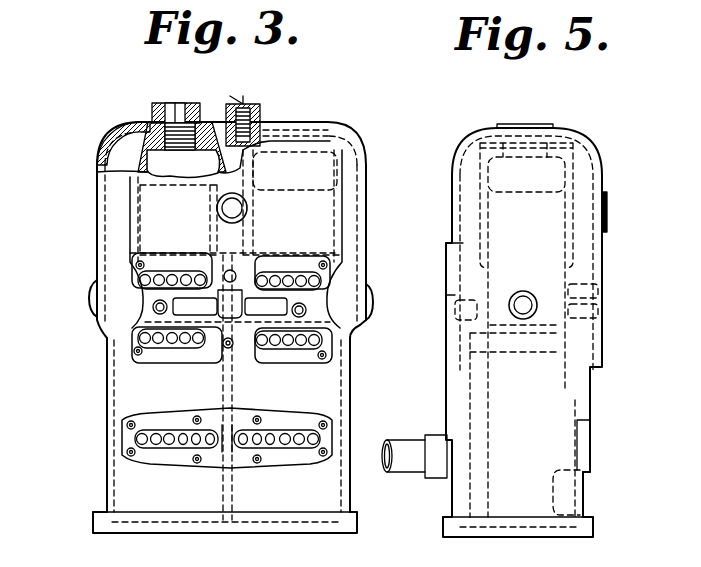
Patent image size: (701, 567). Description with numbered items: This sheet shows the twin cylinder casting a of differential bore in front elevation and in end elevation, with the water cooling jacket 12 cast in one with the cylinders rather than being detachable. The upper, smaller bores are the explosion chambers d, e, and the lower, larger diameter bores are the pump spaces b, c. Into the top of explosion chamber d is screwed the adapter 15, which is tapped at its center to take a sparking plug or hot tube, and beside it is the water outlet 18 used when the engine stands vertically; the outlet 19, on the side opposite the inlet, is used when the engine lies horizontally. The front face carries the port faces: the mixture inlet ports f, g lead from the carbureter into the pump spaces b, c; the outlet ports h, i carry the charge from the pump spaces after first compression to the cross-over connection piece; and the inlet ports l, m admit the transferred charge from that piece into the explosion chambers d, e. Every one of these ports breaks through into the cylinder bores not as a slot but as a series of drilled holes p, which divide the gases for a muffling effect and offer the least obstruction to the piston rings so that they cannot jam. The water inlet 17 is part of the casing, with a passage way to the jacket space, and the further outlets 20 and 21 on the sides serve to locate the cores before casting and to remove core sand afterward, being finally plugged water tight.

In FIG. 3, the water cooling jacket 12 is at (97, 210).
In FIG. 5, the water cooling jacket 12 is at (590, 172).
In FIG. 3, the adapter 15 is at (185, 108).
In FIG. 5, the water inlet 17 is at (430, 470).
In FIG. 3, the water outlet 18 is at (246, 106).
In FIG. 3, the water outlet 19 is at (242, 208).
In FIG. 3, the outlet 20 is at (89, 298).
In FIG. 5, the outlet 20 is at (524, 297).
In FIG. 3, the outlet 21 is at (373, 302).
In FIG. 5, the twin cylinder casting a is at (584, 485).
In FIG. 3, the pump space b is at (115, 480).
In FIG. 3, the pump space c is at (335, 486).
In FIG. 3, the explosion chamber d is at (213, 149).
In FIG. 3, the explosion chamber e is at (324, 173).
In FIG. 3, the mixture inlet port f is at (135, 440).
In FIG. 3, the mixture inlet port g is at (318, 440).
In FIG. 3, the outlet port h is at (138, 343).
In FIG. 3, the outlet port i is at (332, 346).
In FIG. 3, the inlet port l is at (140, 275).
In FIG. 3, the inlet port m is at (320, 283).
In FIG. 3, the holes p is at (159, 280).